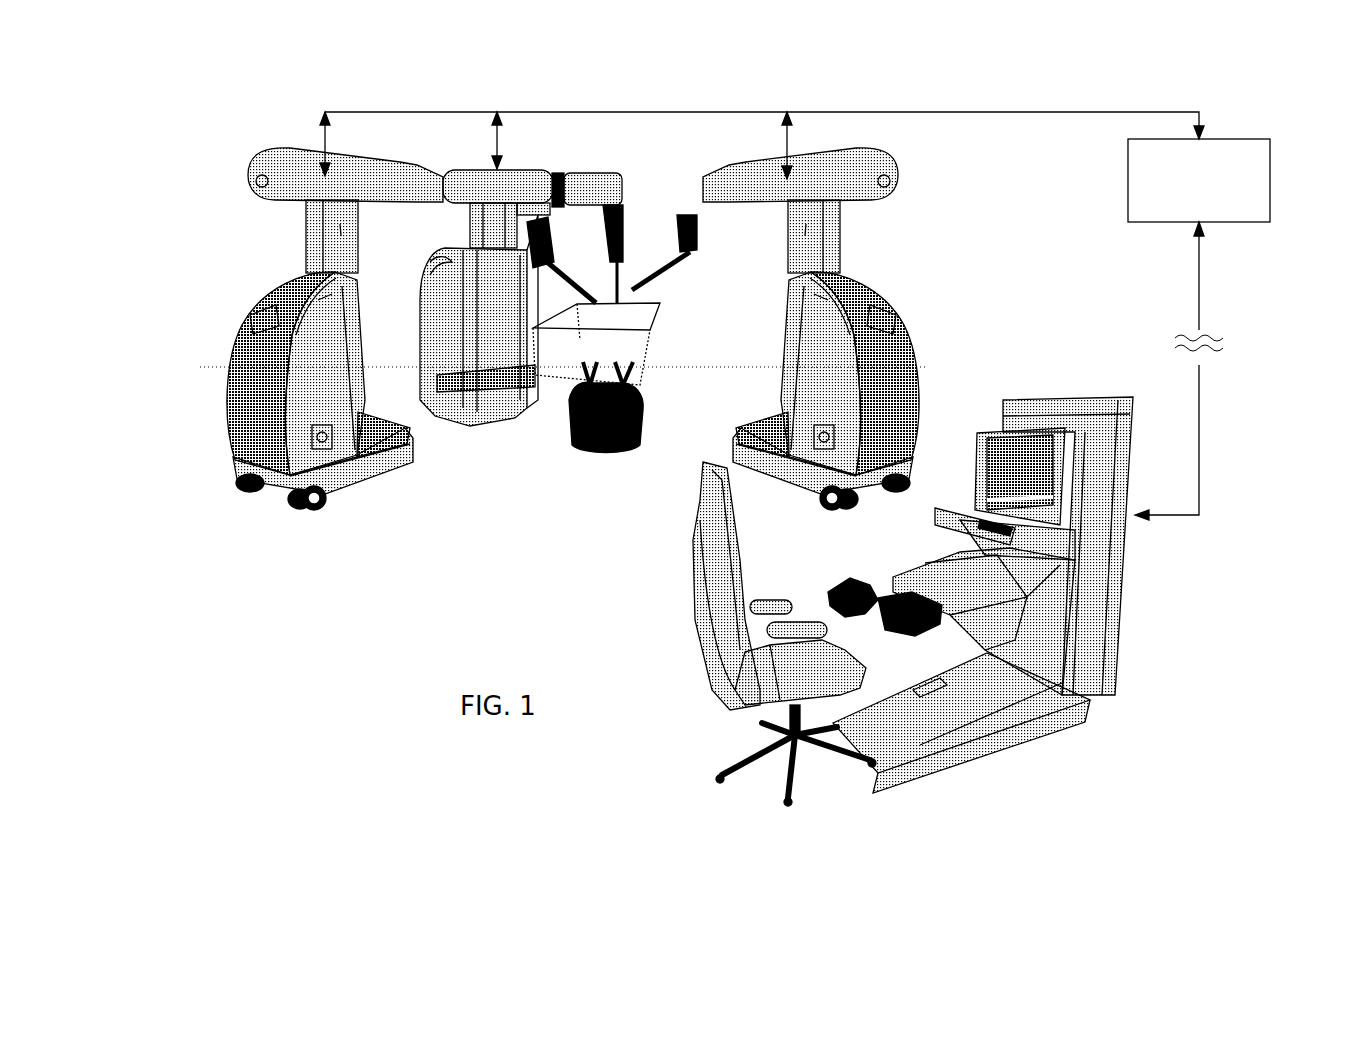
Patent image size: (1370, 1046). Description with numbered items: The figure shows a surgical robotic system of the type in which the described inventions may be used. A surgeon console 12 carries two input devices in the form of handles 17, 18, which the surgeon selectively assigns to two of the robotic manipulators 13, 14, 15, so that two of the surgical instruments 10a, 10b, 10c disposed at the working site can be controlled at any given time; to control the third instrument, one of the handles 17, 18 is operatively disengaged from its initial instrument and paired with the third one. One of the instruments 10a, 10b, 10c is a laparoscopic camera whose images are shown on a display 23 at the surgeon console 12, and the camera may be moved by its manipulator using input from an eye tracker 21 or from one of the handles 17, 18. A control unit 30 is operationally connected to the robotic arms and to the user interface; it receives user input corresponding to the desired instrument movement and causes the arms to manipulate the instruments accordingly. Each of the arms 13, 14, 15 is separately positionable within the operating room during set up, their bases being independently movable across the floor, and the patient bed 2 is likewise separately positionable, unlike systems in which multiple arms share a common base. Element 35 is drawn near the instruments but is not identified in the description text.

The patient bed 2 is at (583, 321).
The surgical instrument 10a is at (650, 283).
The surgical instrument 10b is at (623, 240).
The surgical instrument 10c is at (552, 262).
The surgeon console 12 is at (968, 601).
The robotic manipulator 13 is at (240, 162).
The robotic manipulator 14 is at (535, 172).
The robotic manipulator 15 is at (853, 167).
The handle 17 is at (853, 573).
The handle 18 is at (871, 610).
The eye tracker 21 is at (966, 494).
The display 23 is at (1007, 455).
The control unit 30 is at (1270, 160).
The instrument manipulator 35 is at (692, 248).